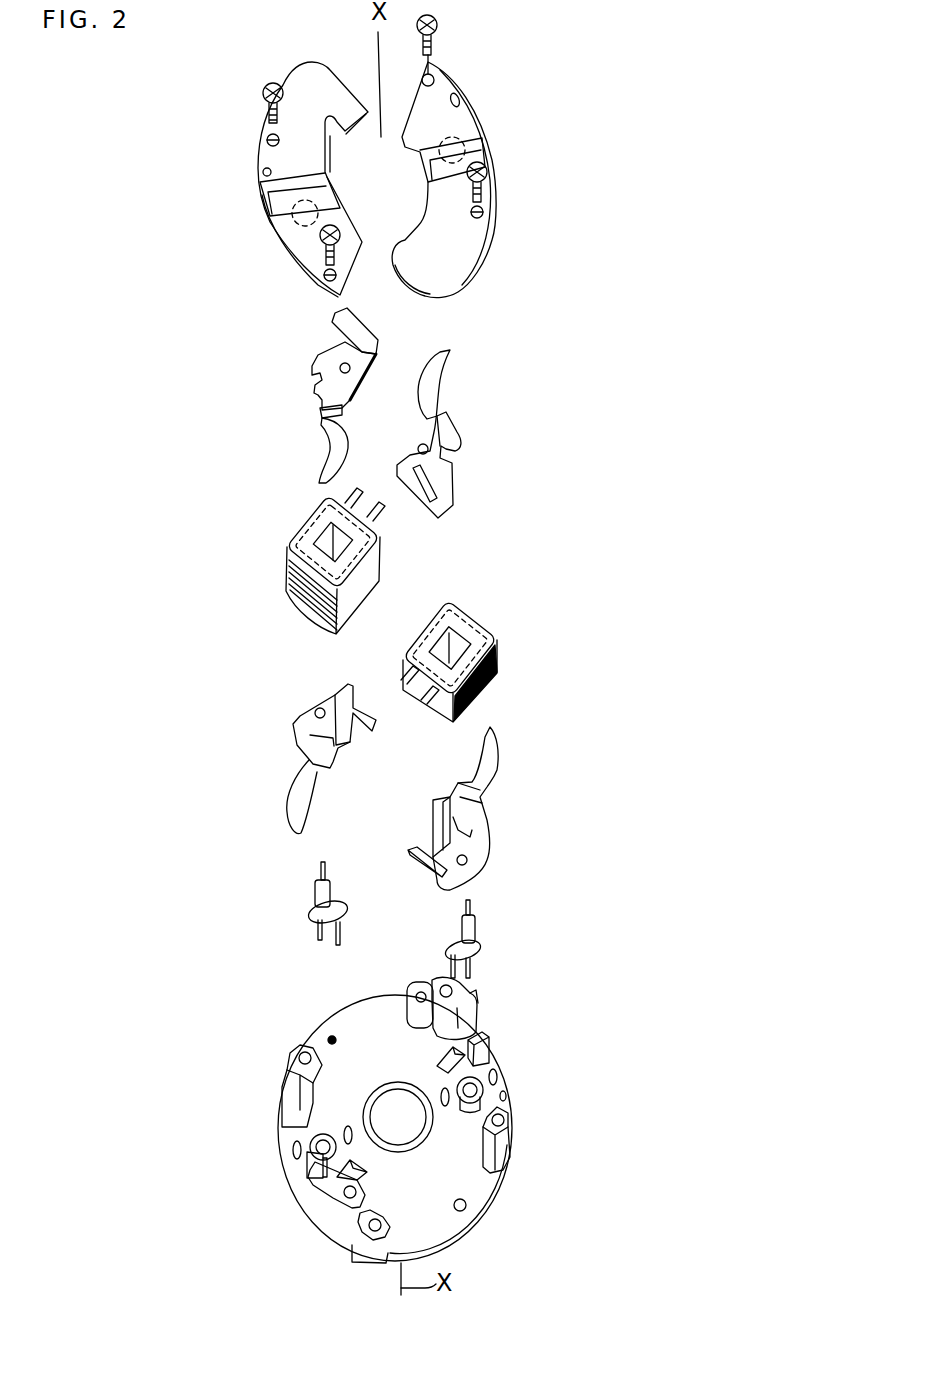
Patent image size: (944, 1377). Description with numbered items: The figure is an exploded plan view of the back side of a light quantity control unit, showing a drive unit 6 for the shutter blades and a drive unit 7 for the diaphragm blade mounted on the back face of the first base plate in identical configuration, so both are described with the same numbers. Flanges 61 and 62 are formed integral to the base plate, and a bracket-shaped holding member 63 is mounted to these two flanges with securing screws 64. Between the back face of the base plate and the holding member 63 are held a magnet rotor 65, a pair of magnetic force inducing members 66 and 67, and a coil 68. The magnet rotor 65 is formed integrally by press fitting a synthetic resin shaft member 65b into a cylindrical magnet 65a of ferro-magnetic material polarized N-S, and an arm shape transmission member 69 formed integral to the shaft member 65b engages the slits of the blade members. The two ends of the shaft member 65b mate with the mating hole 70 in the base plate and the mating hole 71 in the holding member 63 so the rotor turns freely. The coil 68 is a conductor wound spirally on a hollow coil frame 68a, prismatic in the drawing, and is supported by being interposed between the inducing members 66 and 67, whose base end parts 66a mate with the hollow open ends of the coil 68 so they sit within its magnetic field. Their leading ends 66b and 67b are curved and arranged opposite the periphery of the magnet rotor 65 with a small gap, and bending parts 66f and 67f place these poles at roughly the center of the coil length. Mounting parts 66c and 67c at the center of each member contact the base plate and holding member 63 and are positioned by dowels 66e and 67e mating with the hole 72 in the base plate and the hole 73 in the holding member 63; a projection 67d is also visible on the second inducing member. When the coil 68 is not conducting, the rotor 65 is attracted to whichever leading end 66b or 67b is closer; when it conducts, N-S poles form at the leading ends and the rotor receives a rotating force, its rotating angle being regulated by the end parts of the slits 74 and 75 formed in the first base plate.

The drive unit for the shutter blades 6 is at (527, 382).
The drive unit for the diaphragm blade 7 is at (245, 375).
The flange 61 is at (470, 1020).
The flange 62 is at (292, 1057).
The holding member 63 is at (268, 67).
The securing screw 64 is at (263, 96).
The magnet rotor 65 is at (295, 893).
The cylindrical shape magnet 65a is at (332, 890).
The shaft member 65b is at (325, 870).
The magnetic force inducing member 66 is at (290, 737).
The base end part 66a is at (350, 695).
The leading end 66b is at (480, 752).
The mounting part 66c is at (300, 725).
The dowel 66e is at (320, 708).
The bending part 66f is at (330, 775).
The magnetic force inducing member 67 is at (303, 415).
The leading end 67b is at (450, 350).
The mounting part 67c is at (352, 362).
The yoke projection 67d is at (318, 380).
The dowel 67e is at (362, 382).
The bending part 67f is at (442, 402).
The coil 68 is at (300, 575).
The coil frame 68a is at (362, 548).
The arm shape transmission member 69 is at (345, 940).
The mating hole 70 is at (325, 1134).
The mating hole 71 is at (292, 228).
The hole 72 is at (300, 190).
The hole 73 is at (343, 130).
The slit 74 is at (360, 1176).
The slit 75 is at (445, 1060).